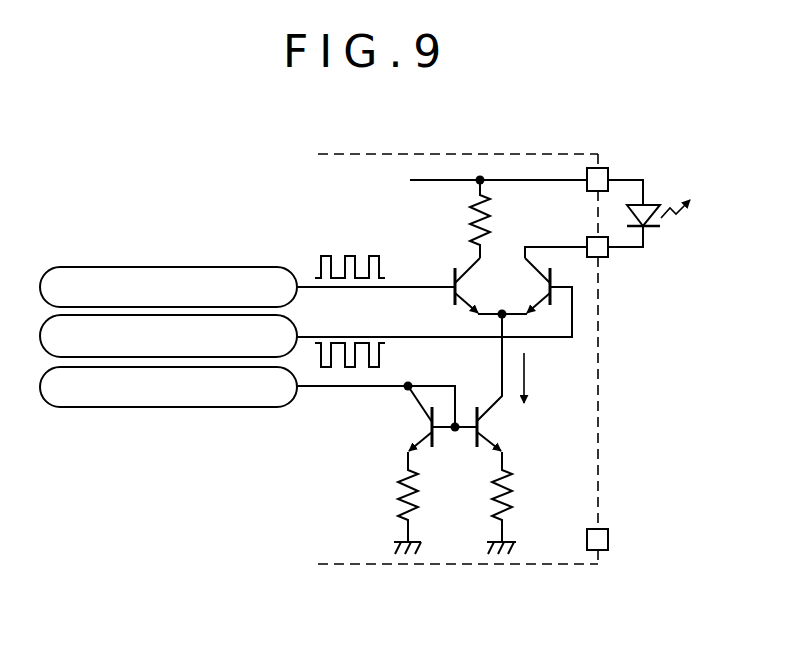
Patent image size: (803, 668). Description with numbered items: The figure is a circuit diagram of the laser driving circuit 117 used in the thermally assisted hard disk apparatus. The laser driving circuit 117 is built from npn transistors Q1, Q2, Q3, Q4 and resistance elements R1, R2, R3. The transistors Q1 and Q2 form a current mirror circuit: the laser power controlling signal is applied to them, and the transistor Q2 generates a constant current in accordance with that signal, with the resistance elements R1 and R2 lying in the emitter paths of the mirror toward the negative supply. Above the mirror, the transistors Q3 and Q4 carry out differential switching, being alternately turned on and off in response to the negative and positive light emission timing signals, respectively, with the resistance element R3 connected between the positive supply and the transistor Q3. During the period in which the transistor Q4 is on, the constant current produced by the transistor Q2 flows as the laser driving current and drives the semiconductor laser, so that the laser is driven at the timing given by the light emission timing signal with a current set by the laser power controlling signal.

The laser driving circuit 117 is at (196, 180).
The npn transistor Q1 is at (401, 418).
The npn transistor Q2 is at (508, 382).
The npn transistor Q3 is at (474, 285).
The npn transistor Q4 is at (529, 285).
The resistance element R1 is at (393, 497).
The resistance element R2 is at (518, 497).
The resistance element R3 is at (461, 219).